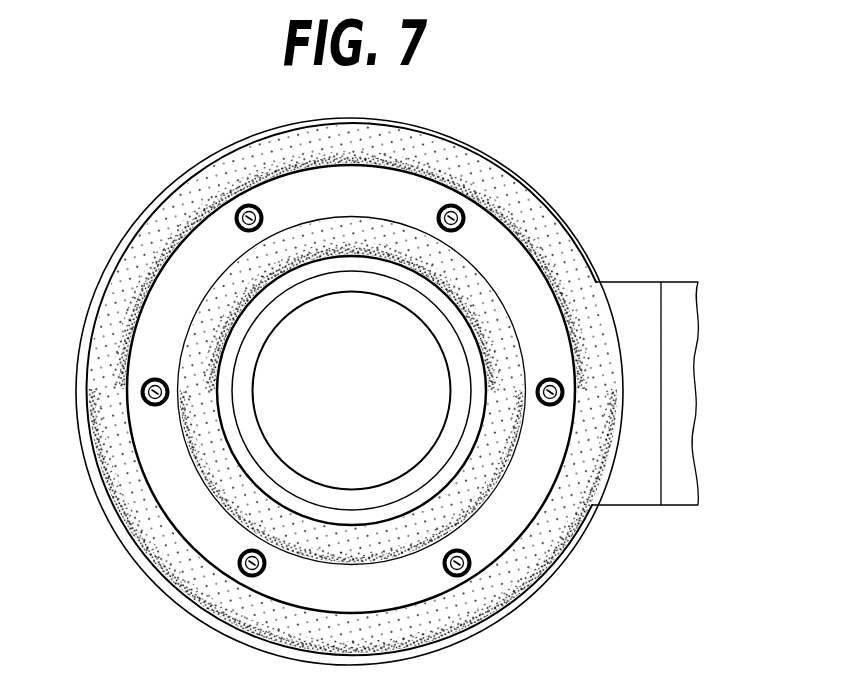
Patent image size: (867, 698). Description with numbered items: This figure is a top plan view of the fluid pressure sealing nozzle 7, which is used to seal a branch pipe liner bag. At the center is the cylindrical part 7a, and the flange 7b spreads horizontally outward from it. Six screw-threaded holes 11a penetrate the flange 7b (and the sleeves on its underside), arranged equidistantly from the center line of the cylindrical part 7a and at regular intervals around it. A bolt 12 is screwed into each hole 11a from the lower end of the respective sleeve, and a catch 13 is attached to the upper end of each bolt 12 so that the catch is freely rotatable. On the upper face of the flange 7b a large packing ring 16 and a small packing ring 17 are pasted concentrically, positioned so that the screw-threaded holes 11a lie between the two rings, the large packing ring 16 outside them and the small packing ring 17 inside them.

The fluid pressure sealing nozzle 7 is at (541, 175).
The cylindrical part 7a is at (283, 485).
The flange 7b is at (112, 525).
The screw-threaded hole 11a is at (262, 212).
The bolt 12 is at (241, 207).
The catch 13 is at (251, 231).
The large packing ring 16 is at (572, 270).
The small packing ring 17 is at (478, 342).